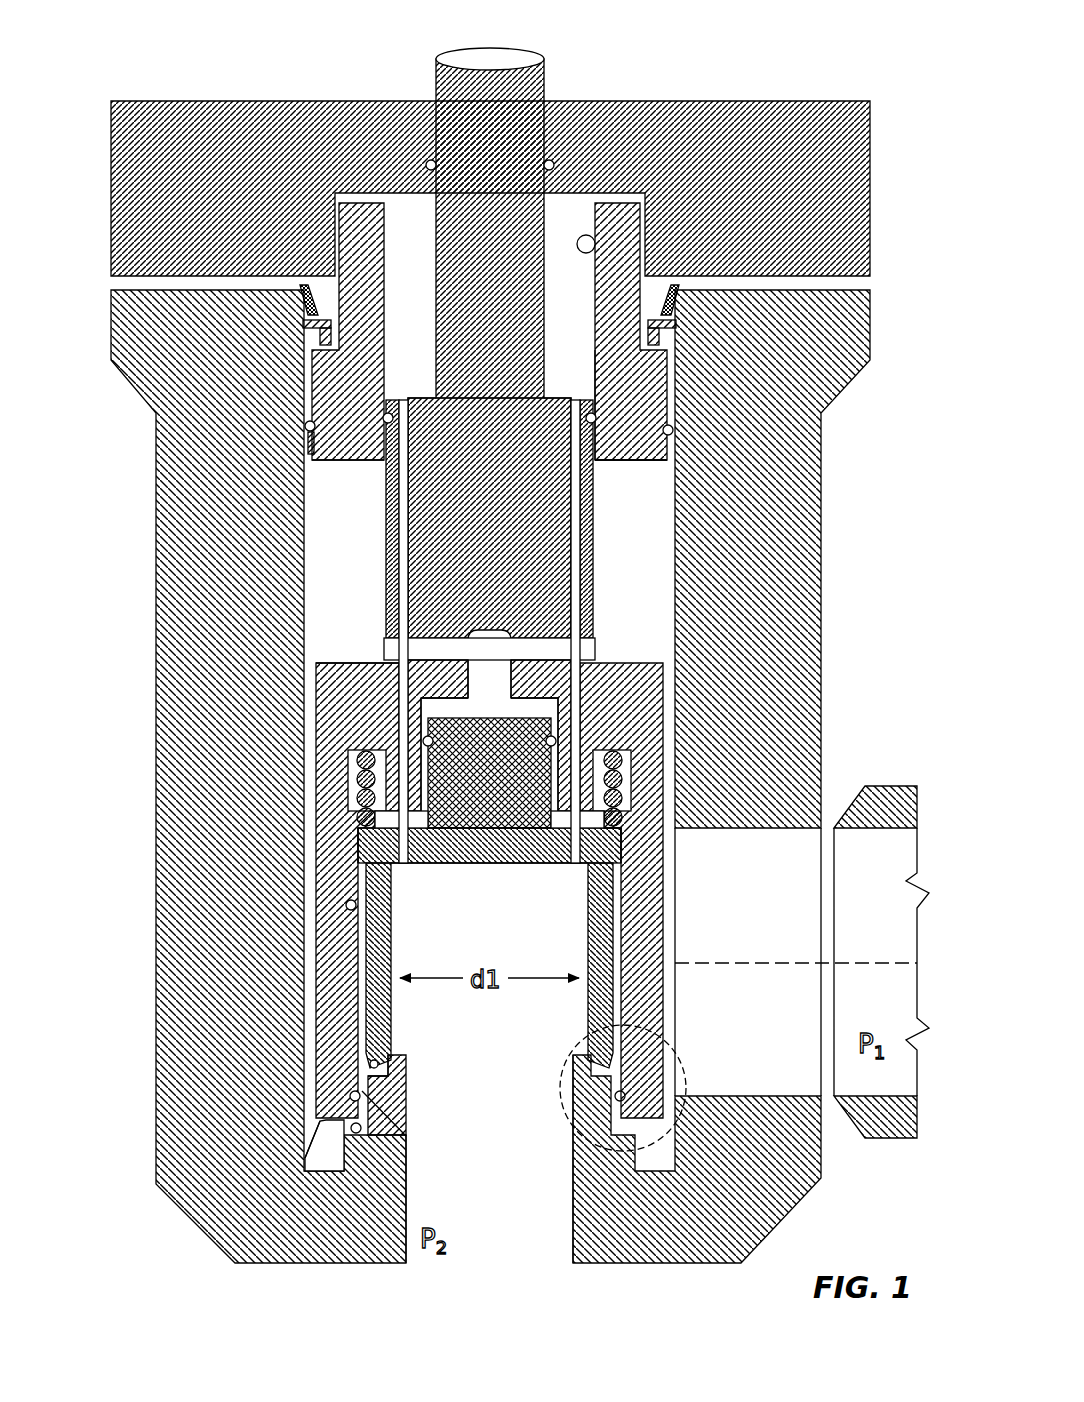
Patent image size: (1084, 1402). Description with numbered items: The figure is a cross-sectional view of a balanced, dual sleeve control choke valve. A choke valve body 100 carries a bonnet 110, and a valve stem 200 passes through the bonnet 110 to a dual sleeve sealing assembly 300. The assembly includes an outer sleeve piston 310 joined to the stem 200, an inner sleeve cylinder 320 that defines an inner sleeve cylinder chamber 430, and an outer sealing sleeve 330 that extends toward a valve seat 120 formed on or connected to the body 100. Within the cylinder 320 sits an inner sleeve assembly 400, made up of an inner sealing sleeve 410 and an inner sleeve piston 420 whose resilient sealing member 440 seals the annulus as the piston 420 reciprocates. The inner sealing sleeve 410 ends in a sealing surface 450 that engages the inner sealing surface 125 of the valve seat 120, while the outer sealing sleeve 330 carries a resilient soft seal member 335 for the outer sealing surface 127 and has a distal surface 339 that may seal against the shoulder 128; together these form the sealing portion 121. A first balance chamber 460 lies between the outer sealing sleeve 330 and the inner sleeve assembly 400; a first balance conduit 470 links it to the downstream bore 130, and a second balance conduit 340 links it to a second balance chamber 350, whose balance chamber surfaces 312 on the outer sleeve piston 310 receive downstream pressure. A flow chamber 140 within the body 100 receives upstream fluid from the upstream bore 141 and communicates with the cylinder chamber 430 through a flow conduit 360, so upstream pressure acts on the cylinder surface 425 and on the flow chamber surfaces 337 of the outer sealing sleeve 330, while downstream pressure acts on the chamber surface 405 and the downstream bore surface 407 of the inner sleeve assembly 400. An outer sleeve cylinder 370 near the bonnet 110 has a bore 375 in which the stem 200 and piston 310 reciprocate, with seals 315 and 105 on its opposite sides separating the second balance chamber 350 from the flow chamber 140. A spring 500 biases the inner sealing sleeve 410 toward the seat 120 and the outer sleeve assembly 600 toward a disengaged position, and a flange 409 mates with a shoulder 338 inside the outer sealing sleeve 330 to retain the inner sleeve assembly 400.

The choke valve body 100 is at (848, 322).
The seal 105 is at (304, 452).
The bonnet 110 is at (858, 139).
The valve seat 120 is at (410, 1098).
The sealing portion 121 is at (682, 1049).
The inner sealing surface 125 is at (374, 1067).
The outer sealing surface 127 is at (353, 1123).
The shoulder 128 is at (325, 1125).
The downstream bore 130 is at (483, 1238).
The flow chamber 140 is at (364, 527).
The upstream bore 141 is at (793, 918).
The valve stem 200 is at (512, 50).
The dual sleeve sealing assembly 300 is at (645, 518).
The outer sleeve piston 310 is at (530, 568).
The balance chamber surfaces 312 is at (588, 386).
The seal 315 is at (590, 447).
The inner sleeve cylinder 320 is at (386, 770).
The outer sealing sleeve 330 is at (313, 884).
The resilient soft seal member 335 is at (398, 1130).
The flow chamber surfaces 337 is at (336, 654).
The shoulder 338 is at (340, 895).
The distal surface 339 is at (308, 1124).
The second balance conduit 340 is at (397, 473).
The second balance chamber 350 is at (428, 255).
The flow conduit 360 is at (381, 641).
The outer sleeve cylinder 370 is at (592, 318).
The bore 375 is at (582, 230).
The inner sleeve assembly 400 is at (489, 893).
The chamber surface 405 is at (603, 812).
The downstream bore surface 407 is at (530, 855).
The flange 409 is at (347, 856).
The inner sealing sleeve 410 is at (380, 992).
The inner sleeve piston 420 is at (462, 830).
The cylinder surface 425 is at (533, 708).
The inner sleeve cylinder chamber 430 is at (503, 704).
The resilient sealing member 440 is at (424, 740).
The sealing surface 450 is at (368, 1054).
The first balance chamber 460 is at (614, 772).
The first balance conduit 470 is at (577, 855).
The spring 500 is at (358, 772).
The outer sleeve assembly 600 is at (439, 890).